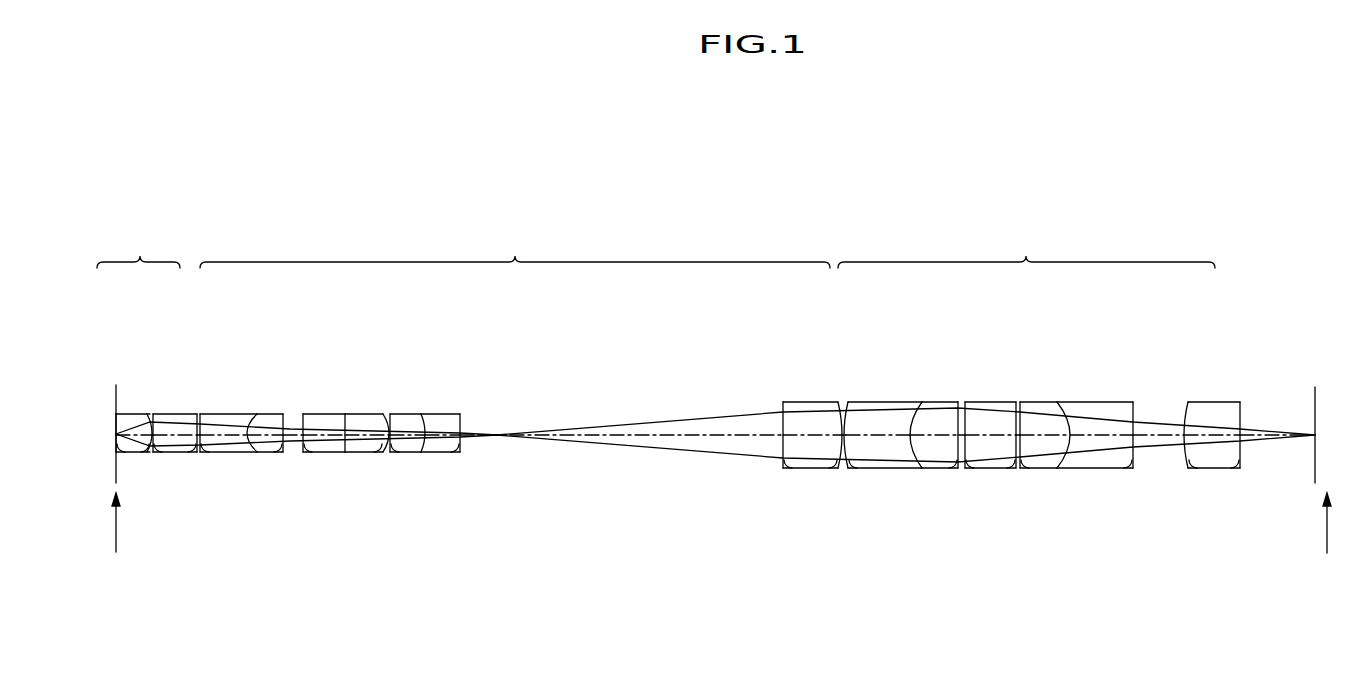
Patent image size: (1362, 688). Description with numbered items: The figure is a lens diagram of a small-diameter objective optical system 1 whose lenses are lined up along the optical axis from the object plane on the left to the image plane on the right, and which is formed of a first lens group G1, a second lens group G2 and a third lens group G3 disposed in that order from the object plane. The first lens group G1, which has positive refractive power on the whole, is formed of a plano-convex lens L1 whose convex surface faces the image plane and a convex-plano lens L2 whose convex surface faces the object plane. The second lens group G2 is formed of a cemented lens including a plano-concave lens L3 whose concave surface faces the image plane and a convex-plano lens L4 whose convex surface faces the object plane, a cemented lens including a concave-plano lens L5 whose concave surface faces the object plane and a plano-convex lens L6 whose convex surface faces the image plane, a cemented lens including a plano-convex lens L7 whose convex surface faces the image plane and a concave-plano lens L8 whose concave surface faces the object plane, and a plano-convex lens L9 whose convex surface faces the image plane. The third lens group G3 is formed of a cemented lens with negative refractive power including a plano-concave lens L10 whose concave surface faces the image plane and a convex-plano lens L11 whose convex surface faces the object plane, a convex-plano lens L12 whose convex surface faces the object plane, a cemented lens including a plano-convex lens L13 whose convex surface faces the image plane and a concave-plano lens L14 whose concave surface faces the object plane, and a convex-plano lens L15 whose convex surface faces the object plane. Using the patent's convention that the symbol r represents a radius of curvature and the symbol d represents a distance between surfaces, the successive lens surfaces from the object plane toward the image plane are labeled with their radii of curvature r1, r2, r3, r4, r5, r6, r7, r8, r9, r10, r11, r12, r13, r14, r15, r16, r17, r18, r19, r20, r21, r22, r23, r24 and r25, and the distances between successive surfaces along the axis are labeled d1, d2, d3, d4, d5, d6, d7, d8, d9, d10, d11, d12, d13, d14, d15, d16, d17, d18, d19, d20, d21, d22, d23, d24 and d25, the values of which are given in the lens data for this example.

The small-diameter objective optical system 1 is at (858, 181).
The first lens group G1 is at (138, 245).
The second lens group G2 is at (515, 245).
The third lens group G3 is at (1026, 245).
The plano-convex lens L1 is at (133, 412).
The convex-plano lens L2 is at (172, 412).
The plano-concave lens L3 is at (215, 412).
The convex-plano lens L4 is at (270, 412).
The concave-plano lens L5 is at (320, 412).
The plano-convex lens L6 is at (364, 412).
The plano-convex lens L7 is at (412, 412).
The concave-plano lens L8 is at (446, 412).
The plano-convex lens L9 is at (810, 400).
The plano-concave lens L10 is at (856, 400).
The convex-plano lens L11 is at (940, 400).
The convex-plano lens L12 is at (978, 400).
The plano-convex lens L13 is at (1034, 400).
The concave-plano lens L14 is at (1126, 400).
The convex-plano lens L15 is at (1196, 400).
The radius of curvature of first surface r1 is at (120, 454).
The radius of curvature of second surface r2 is at (148, 454).
The radius of curvature of third surface r3 is at (156, 454).
The radius of curvature of fourth surface r4 is at (197, 454).
The radius of curvature of fifth surface r5 is at (203, 454).
The radius of curvature of sixth surface r6 is at (254, 454).
The radius of curvature of seventh surface r7 is at (282, 454).
The radius of curvature of eighth surface r8 is at (304, 454).
The radius of curvature of ninth surface r9 is at (346, 454).
The radius of curvature of tenth surface r10 is at (386, 454).
The radius of curvature of eleventh surface r11 is at (395, 454).
The radius of curvature of twelfth surface r12 is at (432, 454).
The radius of curvature of thirteenth surface r13 is at (462, 454).
The radius of curvature of fourteenth surface r14 is at (783, 470).
The radius of curvature of fifteenth surface r15 is at (838, 470).
The radius of curvature of sixteenth surface r16 is at (847, 470).
The radius of curvature of seventeenth surface r17 is at (912, 470).
The radius of curvature of eighteenth surface r18 is at (928, 470).
The radius of curvature of nineteenth surface r19 is at (966, 470).
The radius of curvature of twentieth surface r20 is at (1015, 470).
The radius of curvature of twenty-first surface r21 is at (1024, 470).
The radius of curvature of twenty-second surface r22 is at (1068, 470).
The radius of curvature of twenty-third surface r23 is at (1133, 470).
The radius of curvature of twenty-fourth surface r24 is at (1187, 470).
The radius of curvature of twenty-fifth surface r25 is at (1238, 470).
The first surface distance d1 is at (128, 412).
The second surface distance d2 is at (151, 412).
The third surface distance d3 is at (176, 412).
The fourth surface distance d4 is at (198, 412).
The fifth surface distance d5 is at (224, 412).
The sixth surface distance d6 is at (258, 412).
The seventh surface distance d7 is at (290, 412).
The eighth surface distance d8 is at (306, 412).
The ninth surface distance d9 is at (352, 412).
The tenth surface distance d10 is at (370, 412).
The eleventh surface distance d11 is at (402, 412).
The twelfth surface distance d12 is at (474, 412).
The thirteenth surface distance d13 is at (590, 432).
The fourteenth surface distance d14 is at (792, 400).
The fifteenth surface distance d15 is at (843, 400).
The sixteenth surface distance d16 is at (888, 400).
The seventeenth surface distance d17 is at (920, 400).
The eighteenth surface distance d18 is at (961, 400).
The nineteenth surface distance d19 is at (1000, 400).
The twentieth surface distance d20 is at (1018, 400).
The twenty-first surface distance d21 is at (1048, 400).
The twenty-second surface distance d22 is at (1095, 400).
The twenty-third surface distance d23 is at (1152, 400).
The twenty-fourth surface distance d24 is at (1215, 400).
The twenty-fifth surface distance d25 is at (1265, 432).